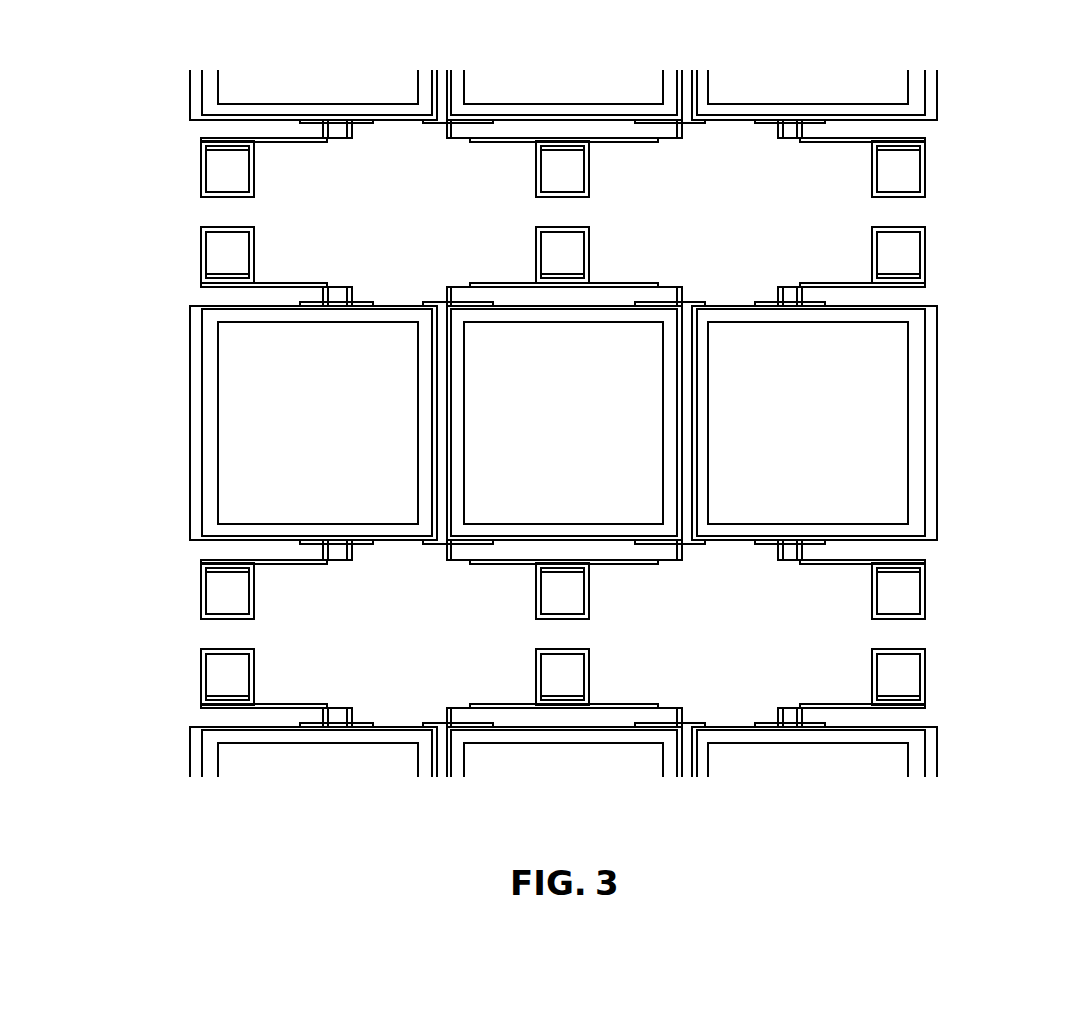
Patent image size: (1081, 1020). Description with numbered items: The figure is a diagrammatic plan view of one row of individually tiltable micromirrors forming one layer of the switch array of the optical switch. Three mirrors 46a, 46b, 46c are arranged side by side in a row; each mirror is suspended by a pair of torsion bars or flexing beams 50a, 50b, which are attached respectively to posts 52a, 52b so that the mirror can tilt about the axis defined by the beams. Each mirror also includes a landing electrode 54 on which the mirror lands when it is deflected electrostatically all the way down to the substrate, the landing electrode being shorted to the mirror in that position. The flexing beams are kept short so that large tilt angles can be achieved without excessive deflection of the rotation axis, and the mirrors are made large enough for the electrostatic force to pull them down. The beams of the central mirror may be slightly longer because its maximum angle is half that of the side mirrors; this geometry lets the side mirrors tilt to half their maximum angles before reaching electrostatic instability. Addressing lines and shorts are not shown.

The micromirror 46a is at (367, 353).
The micromirror 46b is at (572, 352).
The micromirror 46c is at (868, 370).
The torsion bar or flexing beam 50a is at (280, 283).
The torsion bar or flexing beam 50b is at (295, 564).
The post 52a is at (218, 258).
The post 52b is at (216, 175).
The landing electrode 54 is at (191, 385).